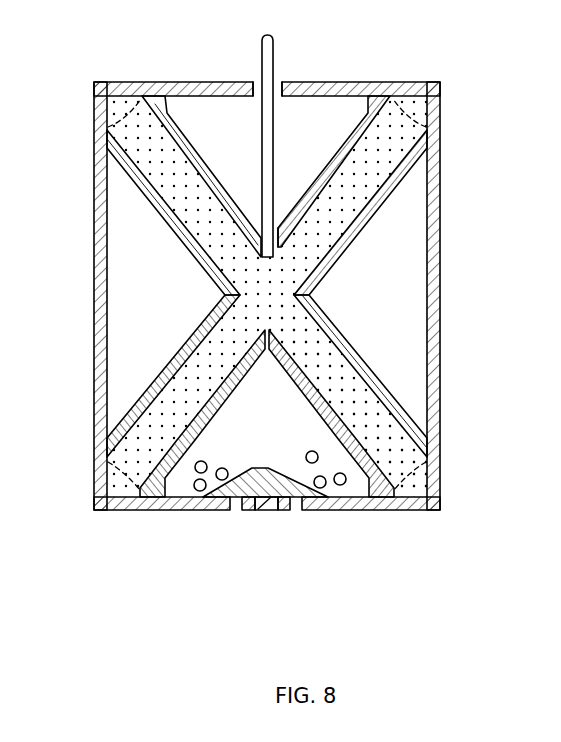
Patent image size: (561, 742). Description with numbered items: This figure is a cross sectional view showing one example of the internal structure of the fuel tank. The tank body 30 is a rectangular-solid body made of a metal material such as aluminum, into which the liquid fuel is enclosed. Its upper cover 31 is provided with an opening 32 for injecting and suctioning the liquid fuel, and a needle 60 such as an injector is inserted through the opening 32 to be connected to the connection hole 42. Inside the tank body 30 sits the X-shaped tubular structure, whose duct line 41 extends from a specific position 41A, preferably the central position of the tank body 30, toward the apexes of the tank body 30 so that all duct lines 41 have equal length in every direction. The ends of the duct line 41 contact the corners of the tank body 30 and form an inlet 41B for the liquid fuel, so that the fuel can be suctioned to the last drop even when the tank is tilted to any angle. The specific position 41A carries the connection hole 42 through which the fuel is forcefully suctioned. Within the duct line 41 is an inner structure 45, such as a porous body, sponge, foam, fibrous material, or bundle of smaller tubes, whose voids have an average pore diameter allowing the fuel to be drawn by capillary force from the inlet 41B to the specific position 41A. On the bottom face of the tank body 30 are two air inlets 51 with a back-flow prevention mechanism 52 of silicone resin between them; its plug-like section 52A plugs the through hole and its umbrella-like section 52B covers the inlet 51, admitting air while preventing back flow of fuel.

The tank body 30 is at (440, 191).
The upper cover 31 is at (405, 87).
The opening 32 is at (277, 83).
The duct line 41 is at (330, 212).
The specific position 41A is at (267, 289).
The inlet 41B is at (100, 113).
The connection hole 42 is at (283, 241).
The inner structure 45 is at (310, 343).
The air inlet 51 is at (228, 513).
The back-flow prevention mechanism 52 is at (265, 544).
The plug-like section 52A is at (270, 513).
The umbrella-like section 52B is at (244, 513).
The needle 60 is at (268, 155).